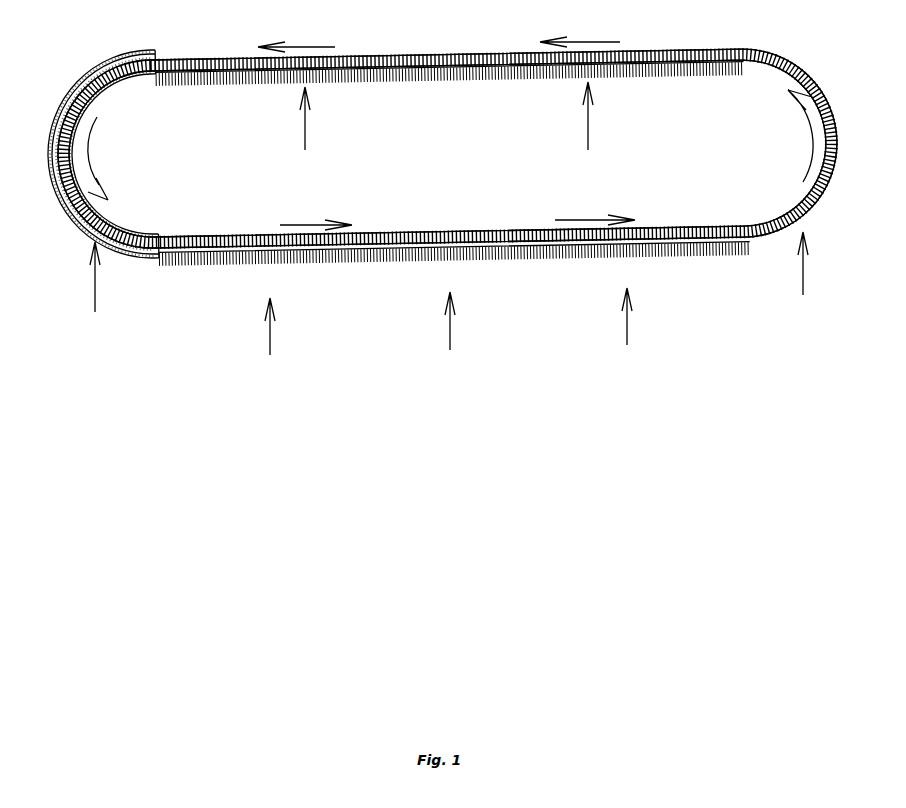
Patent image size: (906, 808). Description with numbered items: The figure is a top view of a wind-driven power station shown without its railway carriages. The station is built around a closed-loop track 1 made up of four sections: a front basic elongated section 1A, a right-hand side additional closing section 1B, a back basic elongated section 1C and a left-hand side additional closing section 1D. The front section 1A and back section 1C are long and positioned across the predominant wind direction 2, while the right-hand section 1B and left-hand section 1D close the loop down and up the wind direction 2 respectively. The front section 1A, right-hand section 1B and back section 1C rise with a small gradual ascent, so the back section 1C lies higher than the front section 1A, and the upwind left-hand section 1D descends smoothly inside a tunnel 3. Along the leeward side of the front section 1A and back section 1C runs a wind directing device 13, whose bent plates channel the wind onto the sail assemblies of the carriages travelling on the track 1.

The closed-loop track 1 is at (452, 237).
The front basic elongated section 1A is at (690, 233).
The right-hand side additional closing section 1B is at (823, 198).
The back basic elongated section 1C is at (668, 47).
The left-hand side additional closing section 1D is at (70, 210).
The predominant wind direction 2 is at (838, 330).
The tunnel 3 is at (112, 82).
The wind directing device 13 is at (660, 255).